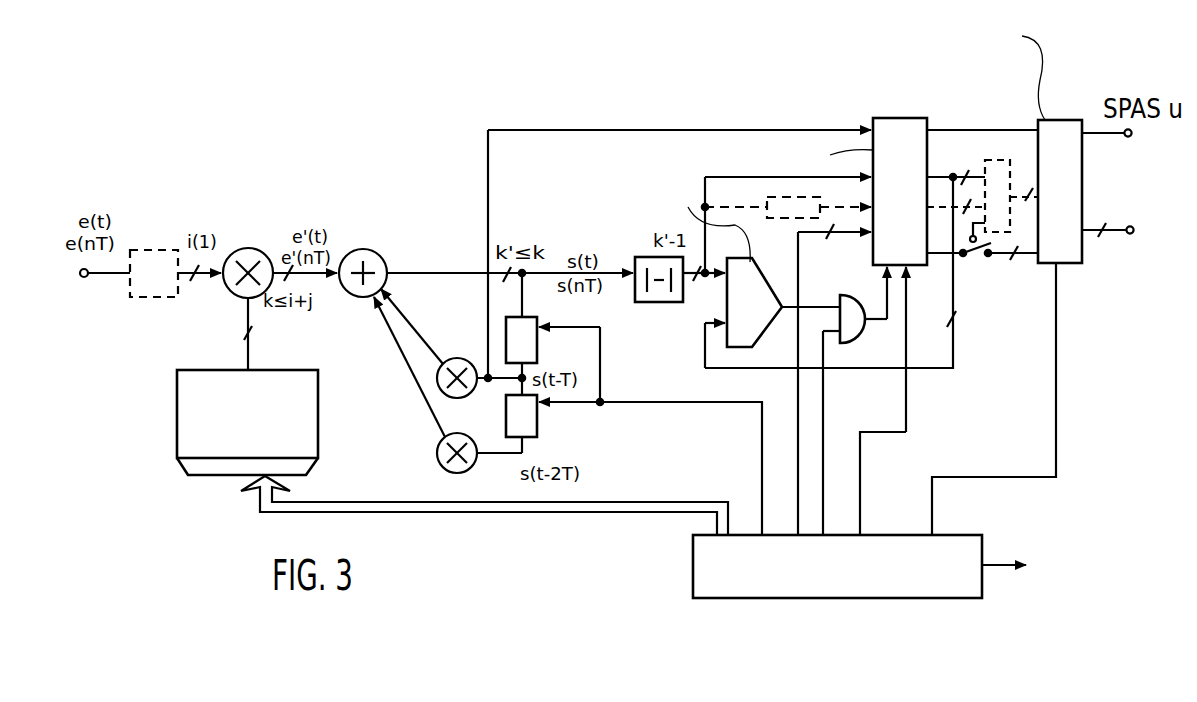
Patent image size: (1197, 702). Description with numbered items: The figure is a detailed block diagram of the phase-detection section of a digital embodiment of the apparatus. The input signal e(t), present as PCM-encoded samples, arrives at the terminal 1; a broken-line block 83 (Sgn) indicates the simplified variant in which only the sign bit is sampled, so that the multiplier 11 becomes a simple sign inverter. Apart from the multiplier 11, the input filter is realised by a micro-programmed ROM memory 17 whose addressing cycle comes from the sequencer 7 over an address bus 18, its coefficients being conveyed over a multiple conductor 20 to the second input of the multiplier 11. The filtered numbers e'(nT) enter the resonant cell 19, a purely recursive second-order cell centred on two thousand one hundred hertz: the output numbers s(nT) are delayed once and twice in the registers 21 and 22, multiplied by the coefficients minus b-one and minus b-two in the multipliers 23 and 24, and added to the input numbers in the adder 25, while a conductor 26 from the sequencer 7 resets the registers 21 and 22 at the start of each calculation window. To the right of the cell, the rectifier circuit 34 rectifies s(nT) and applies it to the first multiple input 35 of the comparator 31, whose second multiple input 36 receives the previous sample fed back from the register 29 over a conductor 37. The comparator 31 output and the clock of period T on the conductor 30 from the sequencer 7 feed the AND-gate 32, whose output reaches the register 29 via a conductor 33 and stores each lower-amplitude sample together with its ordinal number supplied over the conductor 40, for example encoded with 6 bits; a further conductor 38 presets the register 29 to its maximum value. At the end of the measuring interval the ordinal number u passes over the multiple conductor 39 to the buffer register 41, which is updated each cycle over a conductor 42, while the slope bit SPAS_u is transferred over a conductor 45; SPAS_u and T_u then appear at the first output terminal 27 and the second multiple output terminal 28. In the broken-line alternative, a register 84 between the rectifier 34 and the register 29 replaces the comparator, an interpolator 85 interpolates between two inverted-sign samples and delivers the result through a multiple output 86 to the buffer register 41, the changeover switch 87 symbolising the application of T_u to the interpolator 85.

The terminal 1 is at (83, 278).
The broken-line block (Sgn) 83 is at (170, 297).
The multiplier 11 is at (252, 250).
The multiple conductor 20 is at (252, 353).
The ROM memory 17 is at (188, 416).
The address bus 18 is at (600, 508).
The adder 25 is at (366, 249).
The resonant cell 19 is at (462, 300).
The register 21 is at (537, 347).
The register 22 is at (537, 422).
The conductor 26 is at (710, 405).
The multiplier 23 is at (462, 358).
The multiplier 24 is at (437, 453).
The rectifier circuit 34 is at (660, 303).
The first multiple input 35 is at (710, 293).
The second multiple input 36 is at (705, 353).
The conductor 37 is at (953, 350).
The comparator 31 is at (747, 262).
The register 84 is at (786, 218).
The six-bit bus width 6 is at (965, 231).
The conductor 40 is at (797, 410).
The logic AND-gate 32 is at (853, 335).
The conductor 33 is at (887, 293).
The conductor 30 is at (823, 400).
The register 29 is at (910, 128).
The further conductor 38 is at (906, 422).
The conductor 45 is at (988, 130).
The interpolator 85 is at (990, 165).
The multiple output 86 is at (1015, 197).
The changeover switch 87 is at (959, 257).
The multiple conductor 39 is at (1026, 256).
The buffer register 41 is at (1055, 128).
The first output terminal 27 is at (1131, 137).
The second multiple output terminal 28 is at (1132, 234).
The conductor 42 is at (1057, 390).
The sequencer 7 is at (693, 565).